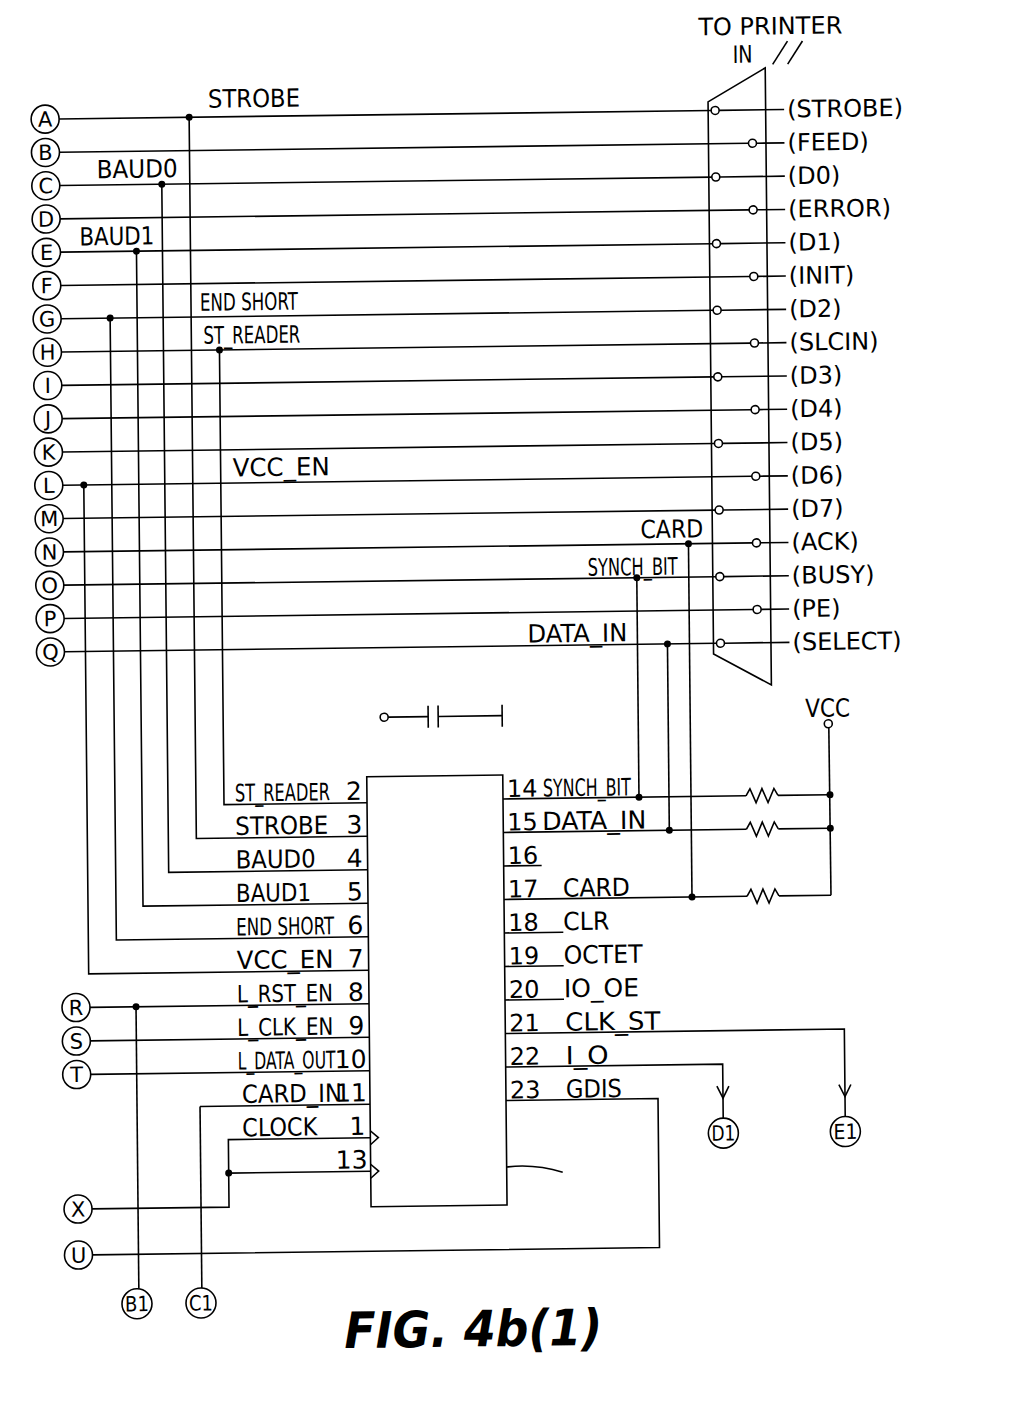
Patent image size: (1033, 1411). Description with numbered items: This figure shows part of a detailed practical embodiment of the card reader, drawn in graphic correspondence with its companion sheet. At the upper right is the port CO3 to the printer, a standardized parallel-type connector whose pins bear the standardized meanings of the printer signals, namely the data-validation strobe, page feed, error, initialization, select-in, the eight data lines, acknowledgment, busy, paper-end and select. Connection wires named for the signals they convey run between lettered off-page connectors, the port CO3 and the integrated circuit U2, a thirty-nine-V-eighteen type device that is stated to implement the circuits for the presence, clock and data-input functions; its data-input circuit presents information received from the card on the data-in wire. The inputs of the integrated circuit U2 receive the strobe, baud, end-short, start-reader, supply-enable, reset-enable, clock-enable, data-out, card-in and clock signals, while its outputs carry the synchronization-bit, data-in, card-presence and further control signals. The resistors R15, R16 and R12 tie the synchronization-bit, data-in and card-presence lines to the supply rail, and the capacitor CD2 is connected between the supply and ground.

The programmable logic device 39V18 U2 is at (485, 994).
The decoupling capacitor 100nf CD2 is at (441, 692).
The port to the printer CO3 is at (728, 96).
The pull-up resistor 22K R15 is at (766, 780).
The pull-up resistor 22K R16 is at (770, 843).
The pull-up resistor 22K R12 is at (774, 911).